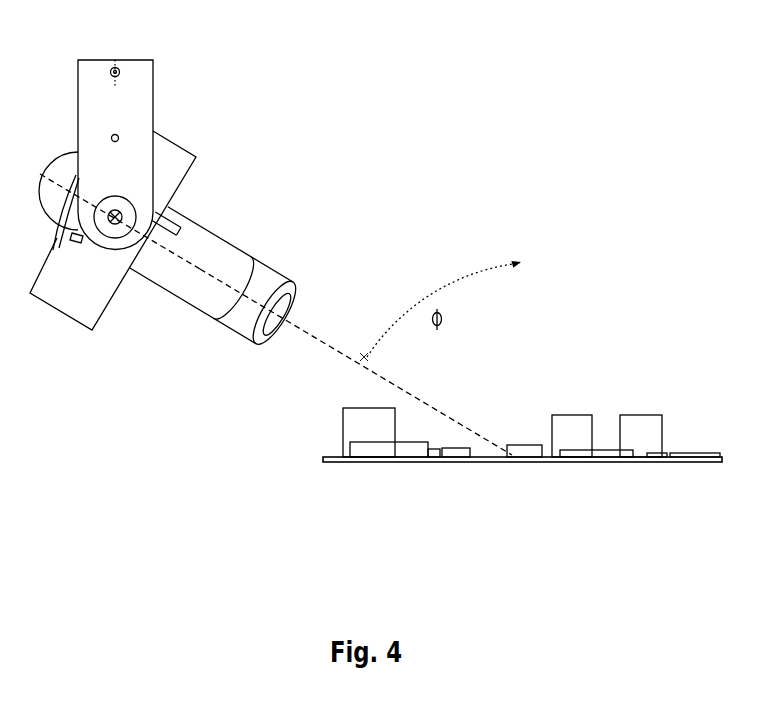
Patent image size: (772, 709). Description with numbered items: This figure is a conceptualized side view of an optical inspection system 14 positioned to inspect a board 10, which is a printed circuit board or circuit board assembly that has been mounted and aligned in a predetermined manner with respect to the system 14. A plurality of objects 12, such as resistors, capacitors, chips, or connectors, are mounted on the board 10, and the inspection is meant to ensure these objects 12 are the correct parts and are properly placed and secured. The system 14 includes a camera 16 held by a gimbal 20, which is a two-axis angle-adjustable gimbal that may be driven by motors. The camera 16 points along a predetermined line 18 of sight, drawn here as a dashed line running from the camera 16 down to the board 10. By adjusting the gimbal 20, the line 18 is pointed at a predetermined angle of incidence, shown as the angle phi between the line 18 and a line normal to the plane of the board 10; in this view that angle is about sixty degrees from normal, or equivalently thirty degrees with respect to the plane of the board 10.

The optical inspection system 14 is at (289, 30).
The gimbal 20 is at (181, 125).
The camera 16 is at (274, 253).
The line of sight 18 is at (412, 392).
The board 10 is at (318, 457).
The objects 12 is at (568, 425).